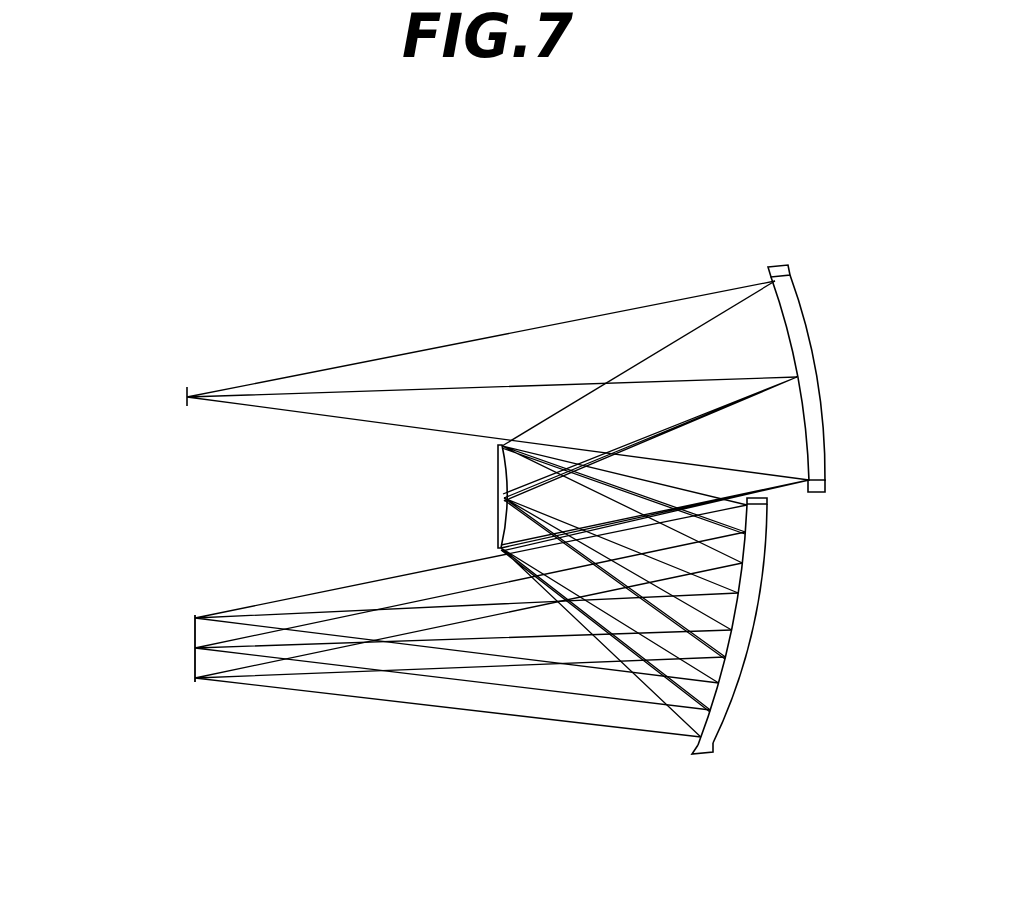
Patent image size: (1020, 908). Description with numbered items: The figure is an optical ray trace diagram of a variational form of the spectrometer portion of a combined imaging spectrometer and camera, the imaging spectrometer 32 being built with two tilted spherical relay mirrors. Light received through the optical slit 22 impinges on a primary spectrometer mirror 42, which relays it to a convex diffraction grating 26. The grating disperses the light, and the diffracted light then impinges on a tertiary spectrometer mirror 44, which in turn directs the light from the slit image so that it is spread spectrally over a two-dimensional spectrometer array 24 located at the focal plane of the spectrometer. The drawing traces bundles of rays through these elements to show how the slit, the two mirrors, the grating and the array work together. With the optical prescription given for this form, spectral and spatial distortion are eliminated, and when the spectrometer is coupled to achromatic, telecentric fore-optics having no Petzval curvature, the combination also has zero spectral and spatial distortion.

The optical slit 22 is at (182, 396).
The two-dimensional spectrometer array 24 is at (195, 643).
The convex diffraction grating 26 is at (497, 481).
The imaging spectrometer 32 is at (577, 239).
The primary spectrometer mirror 42 is at (813, 366).
The tertiary spectrometer mirror 44 is at (752, 641).